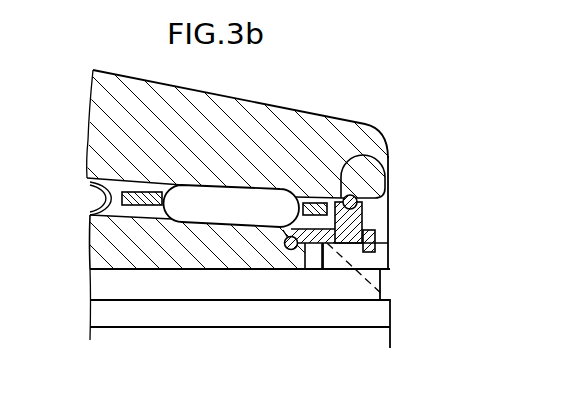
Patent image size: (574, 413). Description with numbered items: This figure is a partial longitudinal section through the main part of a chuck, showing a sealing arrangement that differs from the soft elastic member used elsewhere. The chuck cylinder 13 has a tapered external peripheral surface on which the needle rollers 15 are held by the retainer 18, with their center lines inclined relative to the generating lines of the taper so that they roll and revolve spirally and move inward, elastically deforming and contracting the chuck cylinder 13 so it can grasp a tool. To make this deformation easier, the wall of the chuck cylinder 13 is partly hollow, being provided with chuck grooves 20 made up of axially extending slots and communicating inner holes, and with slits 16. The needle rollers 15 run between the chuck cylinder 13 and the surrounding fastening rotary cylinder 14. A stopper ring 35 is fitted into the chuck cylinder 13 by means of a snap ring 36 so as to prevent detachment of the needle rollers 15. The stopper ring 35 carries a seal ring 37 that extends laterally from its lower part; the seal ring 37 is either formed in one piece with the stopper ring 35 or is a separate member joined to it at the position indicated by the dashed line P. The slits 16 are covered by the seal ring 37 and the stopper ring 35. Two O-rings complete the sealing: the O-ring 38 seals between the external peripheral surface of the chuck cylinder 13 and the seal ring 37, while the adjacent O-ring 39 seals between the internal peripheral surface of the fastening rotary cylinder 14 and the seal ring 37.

The chuck cylinder 13 is at (150, 228).
The fastening rotary cylinder 14 is at (208, 120).
The needle rollers 15 is at (243, 192).
The slits 16 is at (382, 252).
The retainer 18 is at (316, 202).
The chuck grooves 20 is at (140, 327).
The stopper ring 35 is at (362, 214).
The snap ring 36 is at (375, 239).
The seal ring 37 is at (313, 244).
The O-ring 38 is at (384, 156).
The O-ring 39 is at (287, 250).